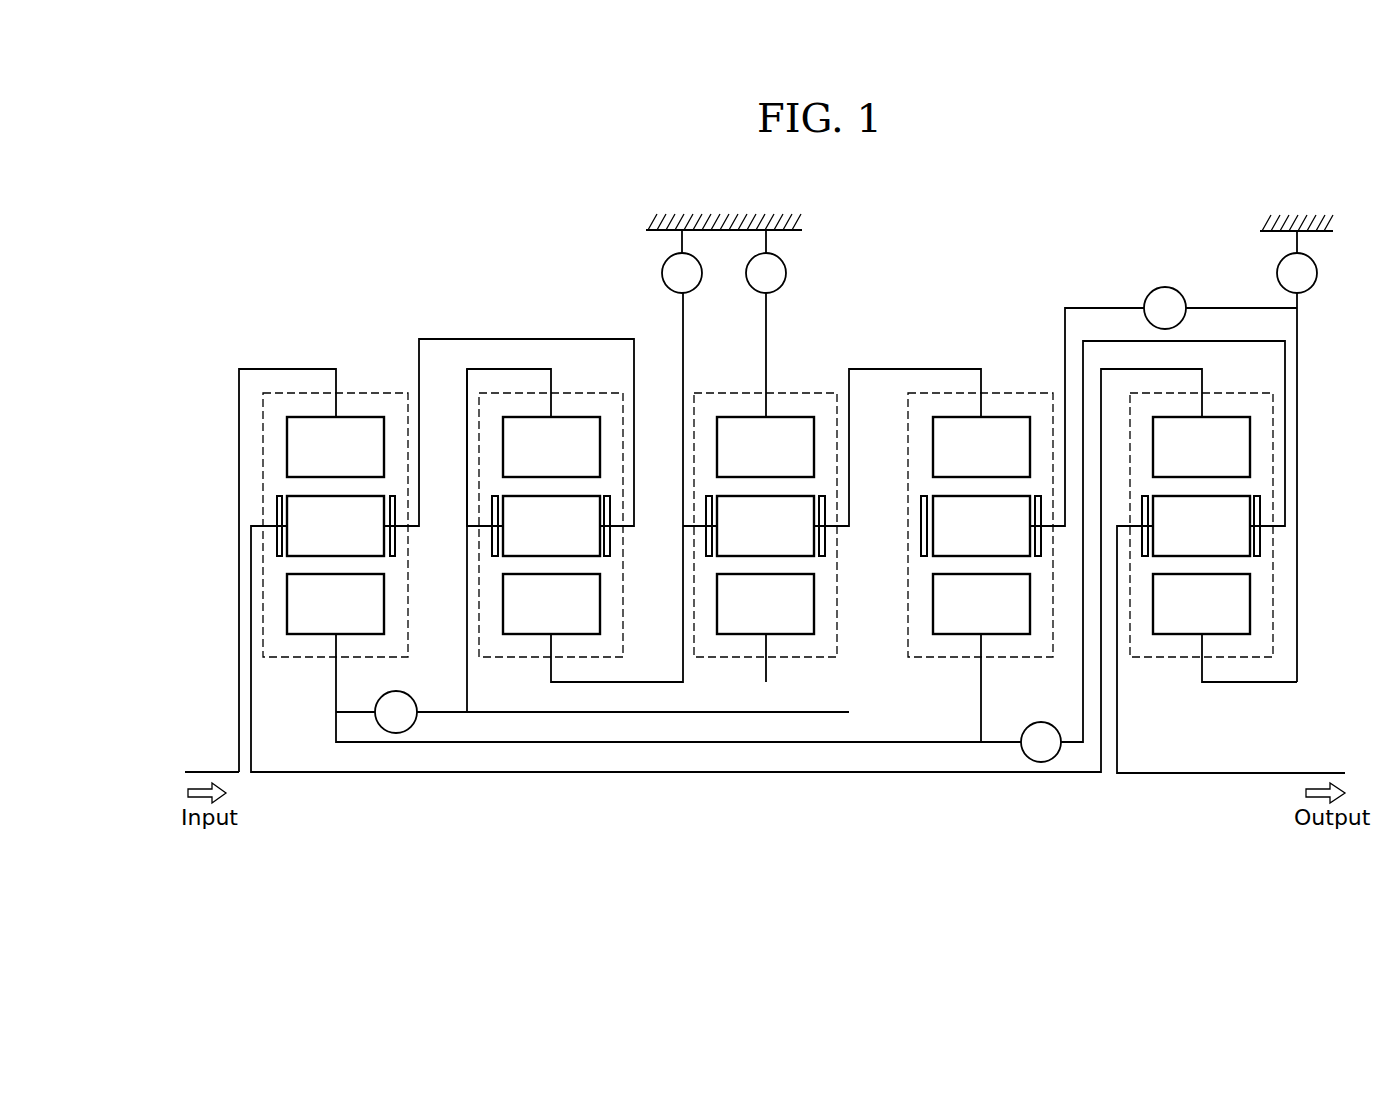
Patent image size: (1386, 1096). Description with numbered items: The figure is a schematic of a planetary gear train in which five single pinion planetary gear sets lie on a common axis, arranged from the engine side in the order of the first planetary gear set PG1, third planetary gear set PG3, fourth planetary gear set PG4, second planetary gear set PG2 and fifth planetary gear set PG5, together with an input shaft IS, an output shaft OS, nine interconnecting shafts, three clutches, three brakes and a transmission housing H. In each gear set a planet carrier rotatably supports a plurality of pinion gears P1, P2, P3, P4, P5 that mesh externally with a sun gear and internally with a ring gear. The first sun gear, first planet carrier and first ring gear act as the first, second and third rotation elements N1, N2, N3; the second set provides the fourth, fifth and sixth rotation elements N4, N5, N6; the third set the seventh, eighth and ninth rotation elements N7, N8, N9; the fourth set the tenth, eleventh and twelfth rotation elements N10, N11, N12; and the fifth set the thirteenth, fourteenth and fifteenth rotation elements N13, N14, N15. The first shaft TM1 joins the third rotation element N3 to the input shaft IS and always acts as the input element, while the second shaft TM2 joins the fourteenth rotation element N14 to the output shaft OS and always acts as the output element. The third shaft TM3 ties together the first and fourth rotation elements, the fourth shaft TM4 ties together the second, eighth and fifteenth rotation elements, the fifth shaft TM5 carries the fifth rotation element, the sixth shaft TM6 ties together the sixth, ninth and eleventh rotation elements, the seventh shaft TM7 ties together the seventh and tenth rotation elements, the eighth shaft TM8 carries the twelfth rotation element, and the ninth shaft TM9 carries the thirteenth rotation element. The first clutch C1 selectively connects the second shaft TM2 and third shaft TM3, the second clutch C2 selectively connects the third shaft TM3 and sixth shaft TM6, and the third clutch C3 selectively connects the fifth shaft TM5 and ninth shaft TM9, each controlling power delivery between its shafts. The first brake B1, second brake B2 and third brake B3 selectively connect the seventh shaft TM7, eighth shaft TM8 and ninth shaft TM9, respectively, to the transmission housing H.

The first planetary gear set PG1 is at (298, 664).
The second planetary gear set PG2 is at (943, 664).
The third planetary gear set PG3 is at (517, 664).
The fourth planetary gear set PG4 is at (806, 664).
The fifth planetary gear set PG5 is at (1165, 664).
The first rotation element N1 is at (335, 604).
The second rotation element N2 is at (396, 548).
The third rotation element N3 is at (335, 447).
The fourth rotation element N4 is at (981, 658).
The fifth rotation element N5 is at (921, 506).
The sixth rotation element N6 is at (981, 447).
The seventh rotation element N7 is at (551, 604).
The eighth rotation element N8 is at (612, 548).
The ninth rotation element N9 is at (551, 447).
The tenth rotation element N10 is at (765, 604).
The eleventh rotation element N11 is at (826, 548).
The twelfth rotation element N12 is at (765, 447).
The thirteenth rotation element N13 is at (1225, 628).
The fourteenth rotation element N14 is at (1262, 548).
The fifteenth rotation element N15 is at (1201, 447).
The first pinion gears P1 is at (336, 526).
The second pinion gears P2 is at (981, 526).
The third pinion gears P3 is at (551, 526).
The fourth pinion gears P4 is at (765, 526).
The fifth pinion gears P5 is at (1201, 526).
The first shaft TM1 is at (279, 368).
The second shaft TM2 is at (1222, 340).
The third shaft TM3 is at (586, 746).
The fourth shaft TM4 is at (450, 774).
The fifth shaft TM5 is at (1065, 331).
The sixth shaft TM6 is at (721, 714).
The seventh shaft TM7 is at (682, 313).
The eighth shaft TM8 is at (766, 313).
The ninth shaft TM9 is at (1298, 331).
The first clutch C1 is at (1041, 742).
The second clutch C2 is at (396, 712).
The third clutch C3 is at (1165, 308).
The first brake B1 is at (682, 273).
The second brake B2 is at (766, 273).
The third brake B3 is at (1297, 273).
The input shaft IS is at (203, 770).
The output shaft OS is at (1320, 771).
The transmission housing H is at (696, 226).